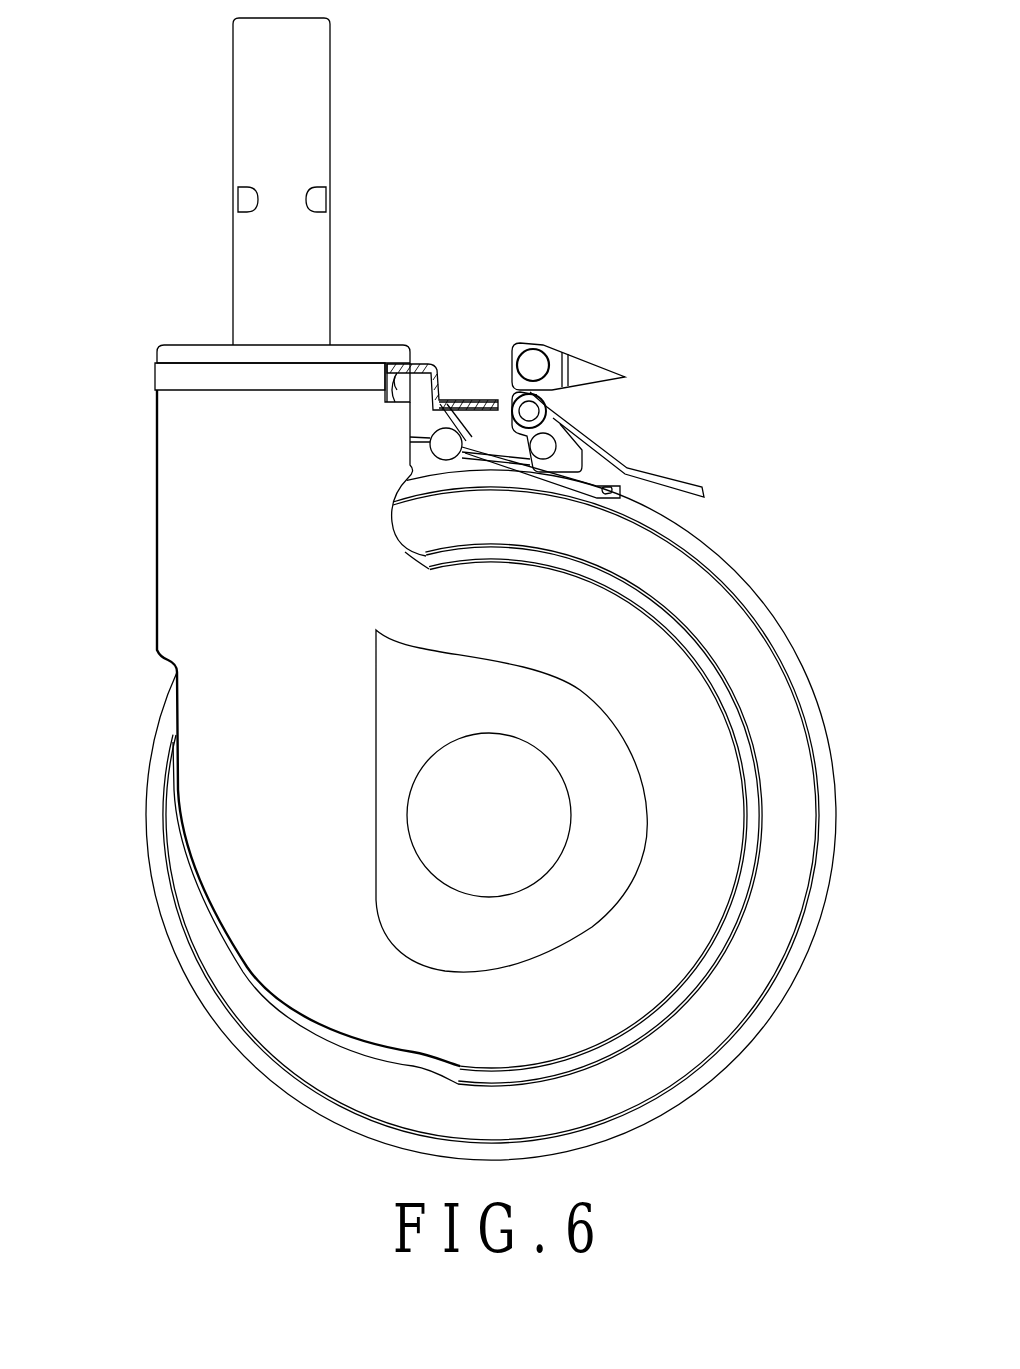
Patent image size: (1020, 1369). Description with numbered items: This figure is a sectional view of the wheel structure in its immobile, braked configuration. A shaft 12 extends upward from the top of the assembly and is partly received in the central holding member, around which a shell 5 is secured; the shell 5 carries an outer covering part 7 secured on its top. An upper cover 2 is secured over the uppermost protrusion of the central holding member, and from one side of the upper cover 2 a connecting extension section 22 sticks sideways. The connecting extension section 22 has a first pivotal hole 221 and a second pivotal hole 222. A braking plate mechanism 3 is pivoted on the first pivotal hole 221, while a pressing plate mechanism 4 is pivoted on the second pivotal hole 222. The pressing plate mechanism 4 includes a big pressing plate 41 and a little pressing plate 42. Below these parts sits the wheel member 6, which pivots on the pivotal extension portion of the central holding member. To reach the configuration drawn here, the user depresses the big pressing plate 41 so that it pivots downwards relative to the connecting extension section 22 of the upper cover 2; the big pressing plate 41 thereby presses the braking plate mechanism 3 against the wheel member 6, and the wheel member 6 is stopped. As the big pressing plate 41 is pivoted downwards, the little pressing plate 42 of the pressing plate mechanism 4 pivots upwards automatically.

The shaft 12 is at (303, 103).
The outer covering part 7 is at (352, 357).
The shell 5 is at (187, 464).
The wheel member 6 is at (795, 783).
The upper cover 2 is at (441, 355).
The connecting extension section 22 is at (480, 378).
The second pivotal hole 222 is at (534, 362).
The little pressing plate 42 is at (613, 372).
The pressing plate mechanism 4 is at (697, 455).
The big pressing plate 41 is at (703, 484).
The braking plate mechanism 3 is at (620, 496).
The first pivotal hole 221 is at (447, 445).